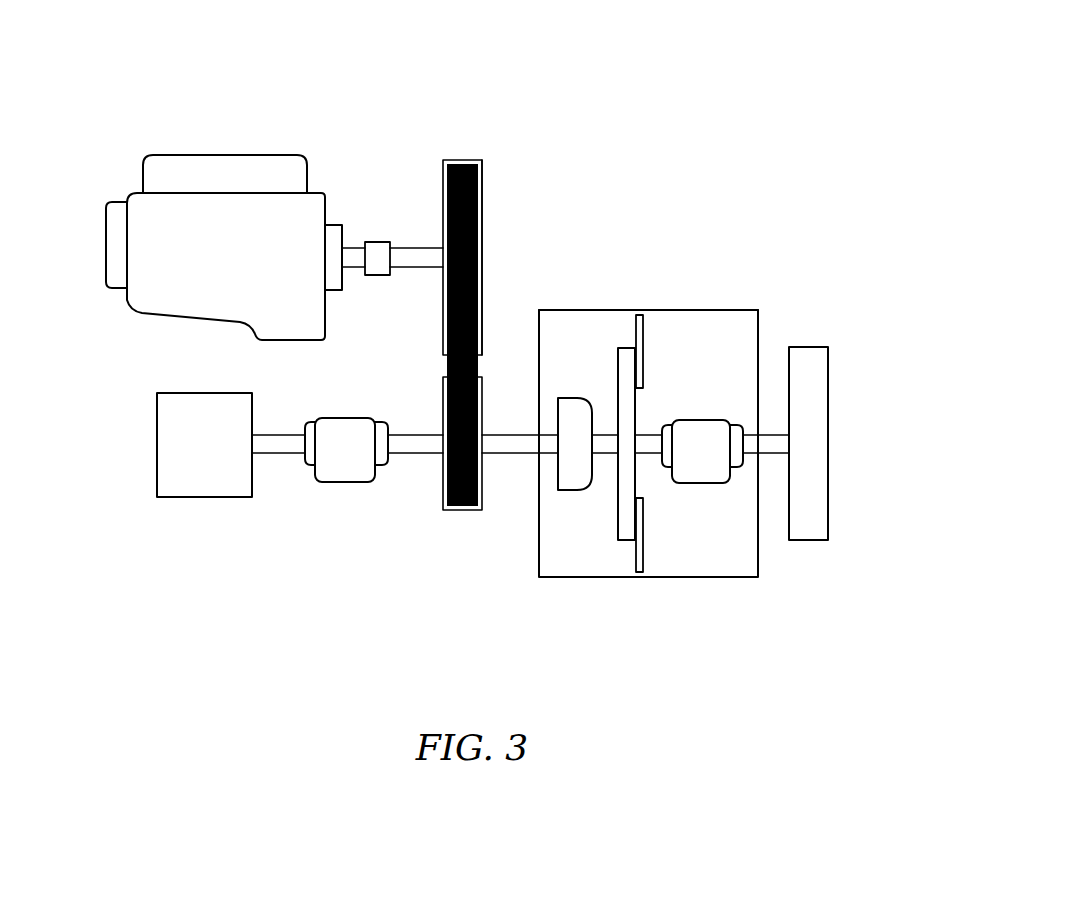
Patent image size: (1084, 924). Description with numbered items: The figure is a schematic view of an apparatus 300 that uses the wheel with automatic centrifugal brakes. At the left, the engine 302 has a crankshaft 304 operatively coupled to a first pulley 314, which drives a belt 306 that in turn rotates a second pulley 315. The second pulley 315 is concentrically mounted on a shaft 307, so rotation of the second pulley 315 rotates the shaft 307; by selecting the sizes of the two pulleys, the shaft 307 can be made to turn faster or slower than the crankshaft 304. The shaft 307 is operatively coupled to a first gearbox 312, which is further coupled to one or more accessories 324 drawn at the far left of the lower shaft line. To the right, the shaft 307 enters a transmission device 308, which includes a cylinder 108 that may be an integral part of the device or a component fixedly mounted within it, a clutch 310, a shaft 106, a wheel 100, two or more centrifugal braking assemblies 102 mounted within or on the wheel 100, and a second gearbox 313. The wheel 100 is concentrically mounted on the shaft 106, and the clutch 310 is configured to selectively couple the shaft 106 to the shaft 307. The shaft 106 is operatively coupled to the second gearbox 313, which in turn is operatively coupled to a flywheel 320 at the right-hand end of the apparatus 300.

The apparatus 300 is at (698, 75).
The engine 302 is at (212, 260).
The crankshaft 304 is at (407, 248).
The belt 306 is at (463, 160).
The first pulley 314 is at (482, 210).
The second pulley 315 is at (443, 493).
The accessories 324 is at (183, 458).
The first gearbox 312 is at (323, 460).
The shaft 307 is at (513, 453).
The transmission device 308 is at (572, 577).
The cylinder 108 is at (672, 310).
The clutch 310 is at (570, 398).
The shaft 106 is at (603, 453).
The wheel 100 is at (622, 330).
The centrifugal braking assemblies 102 is at (654, 559).
The second gearbox 313 is at (679, 461).
The flywheel 320 is at (810, 347).